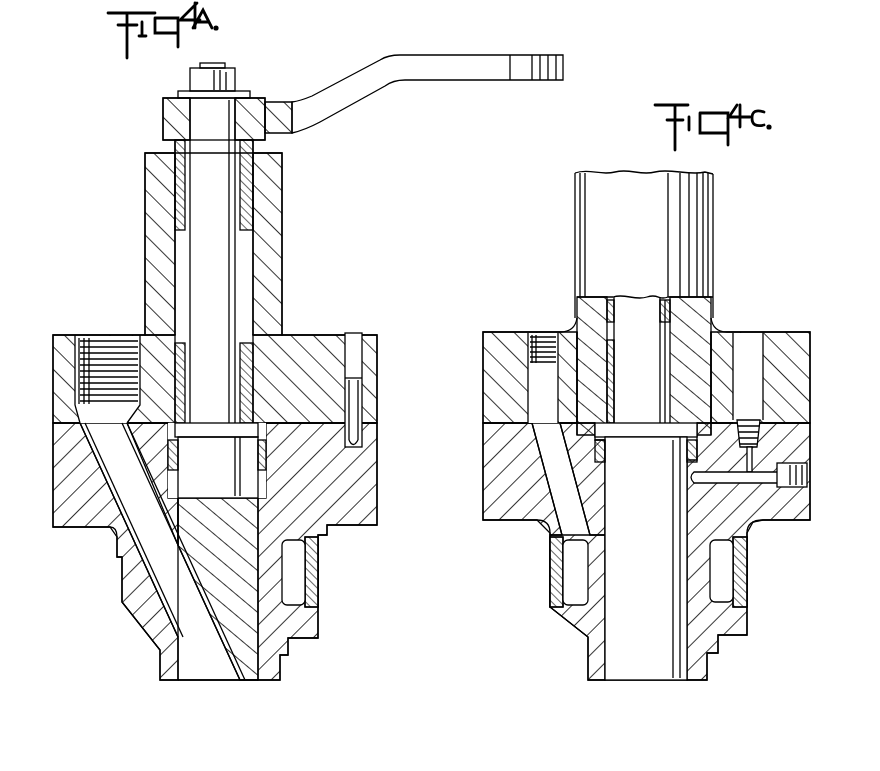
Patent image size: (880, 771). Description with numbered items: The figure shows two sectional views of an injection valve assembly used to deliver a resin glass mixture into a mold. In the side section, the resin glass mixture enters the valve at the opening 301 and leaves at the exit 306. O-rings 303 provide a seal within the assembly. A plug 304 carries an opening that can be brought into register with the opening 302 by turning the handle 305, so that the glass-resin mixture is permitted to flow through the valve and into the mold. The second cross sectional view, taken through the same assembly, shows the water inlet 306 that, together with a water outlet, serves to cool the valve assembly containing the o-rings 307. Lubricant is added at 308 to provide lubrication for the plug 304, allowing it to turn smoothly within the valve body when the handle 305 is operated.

In FIG. 4A, the opening 301 is at (97, 347).
In FIG. 4A, the opening 302 is at (137, 497).
In FIG. 4A, the O-rings 303 is at (74, 432).
In FIG. 4A, the plug 304 is at (250, 531).
In FIG. 4C, the plug 304 is at (690, 515).
In FIG. 4A, the handle 305 is at (456, 73).
In FIG. 4A, the exit / water inlet 306 is at (217, 684).
In FIG. 4C, the exit / water inlet 306 is at (538, 330).
In FIG. 4C, the o-rings 307 is at (528, 440).
In FIG. 4C, the lubricant inlet 308 is at (748, 340).